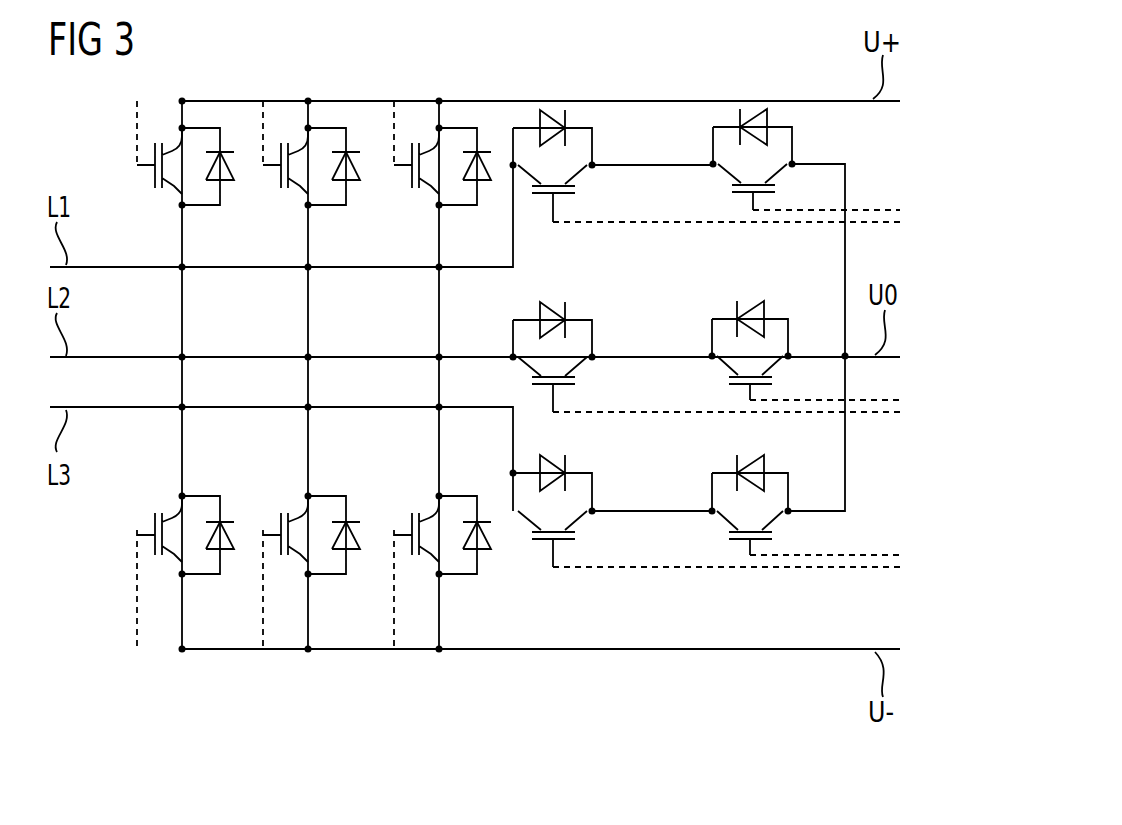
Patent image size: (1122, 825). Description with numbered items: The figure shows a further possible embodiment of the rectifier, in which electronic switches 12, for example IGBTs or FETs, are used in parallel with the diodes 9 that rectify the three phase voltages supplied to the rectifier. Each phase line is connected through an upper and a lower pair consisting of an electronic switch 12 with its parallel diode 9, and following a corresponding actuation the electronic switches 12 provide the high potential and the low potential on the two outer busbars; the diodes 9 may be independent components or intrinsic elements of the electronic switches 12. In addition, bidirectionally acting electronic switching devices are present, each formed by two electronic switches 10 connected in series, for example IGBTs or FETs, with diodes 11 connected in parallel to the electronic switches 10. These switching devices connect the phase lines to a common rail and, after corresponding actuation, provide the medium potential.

The diode 9 is at (232, 172).
The electronic switch 10 is at (548, 198).
The diode 11 is at (548, 120).
The electronic switch 12 is at (154, 182).